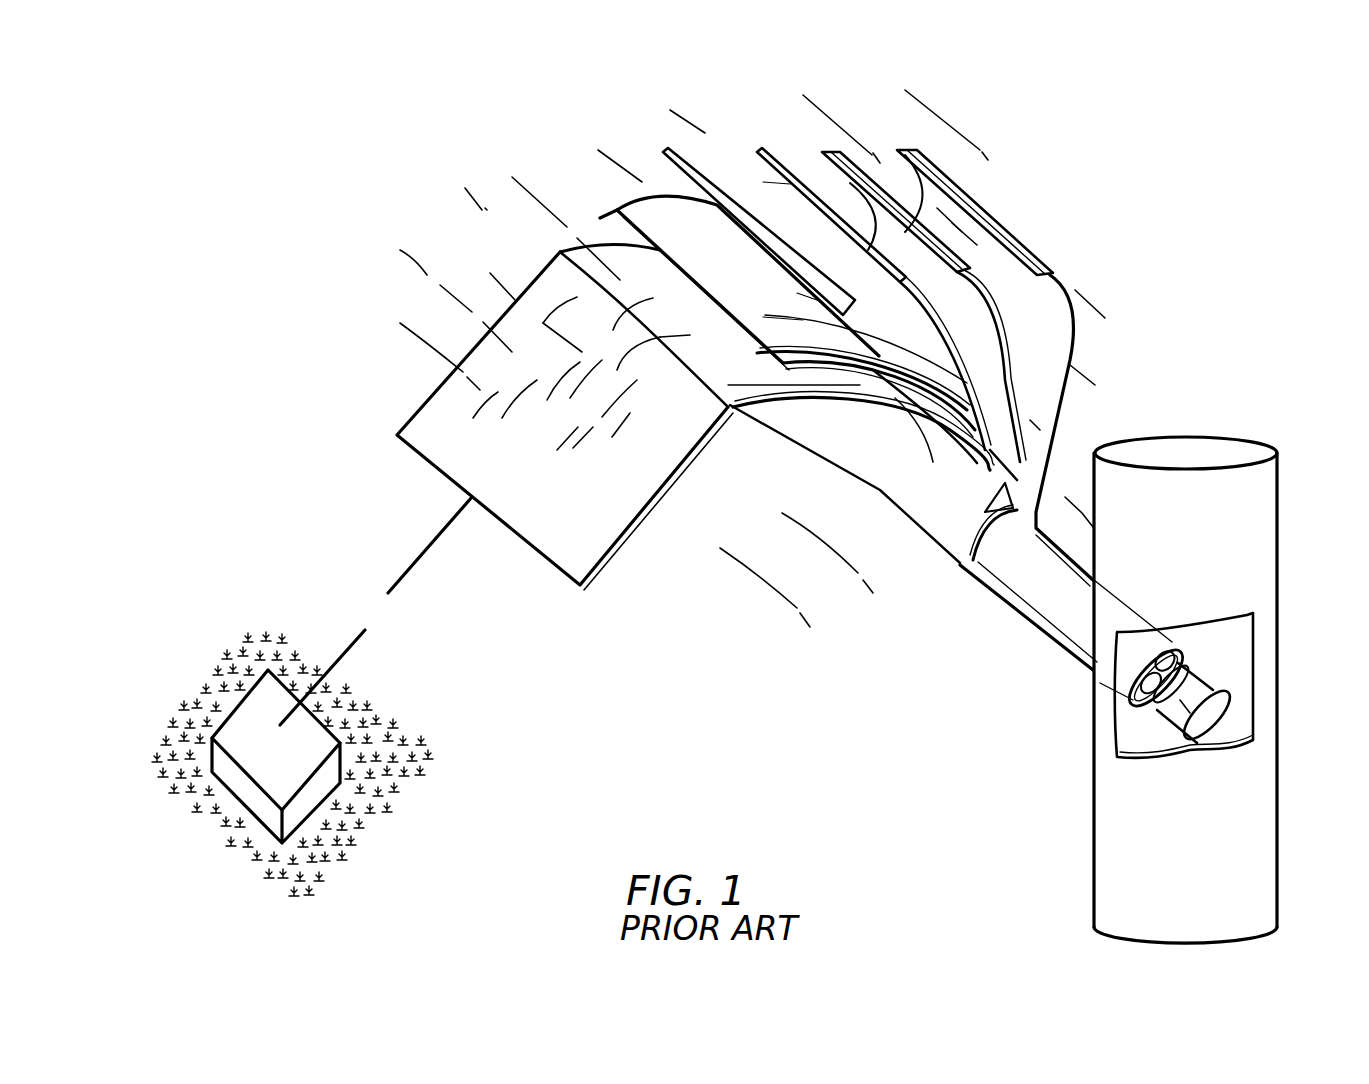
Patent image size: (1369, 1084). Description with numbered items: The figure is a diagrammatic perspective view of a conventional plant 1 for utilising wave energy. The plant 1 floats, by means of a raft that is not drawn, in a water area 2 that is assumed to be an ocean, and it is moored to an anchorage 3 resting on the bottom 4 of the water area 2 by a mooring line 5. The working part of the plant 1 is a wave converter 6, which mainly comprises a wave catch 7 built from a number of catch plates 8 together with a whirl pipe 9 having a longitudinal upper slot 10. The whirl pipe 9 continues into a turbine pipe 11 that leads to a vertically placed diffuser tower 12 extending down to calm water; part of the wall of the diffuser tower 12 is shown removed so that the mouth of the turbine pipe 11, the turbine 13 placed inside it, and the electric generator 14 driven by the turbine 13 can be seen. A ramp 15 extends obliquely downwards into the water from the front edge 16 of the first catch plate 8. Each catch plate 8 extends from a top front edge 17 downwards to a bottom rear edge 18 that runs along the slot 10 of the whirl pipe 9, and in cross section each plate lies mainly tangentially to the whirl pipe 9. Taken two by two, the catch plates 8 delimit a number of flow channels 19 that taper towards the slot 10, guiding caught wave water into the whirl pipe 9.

The plant 1 is at (326, 460).
The water area 2 is at (870, 641).
The anchorage 3 is at (310, 738).
The bottom 4 is at (383, 869).
The mooring line 5 is at (327, 665).
The wave converter 6 is at (1036, 181).
The wave catch 7 is at (1045, 351).
The catch plates 8 is at (730, 184).
The whirl pipe 9 is at (960, 563).
The longitudinal upper slot 10 is at (977, 562).
The turbine pipe 11 is at (1052, 652).
The diffuser tower 12 is at (1247, 873).
The turbine 13 is at (1140, 712).
The electric generator 14 is at (1188, 733).
The ramp 15 is at (603, 518).
The front edge 16 is at (733, 405).
The top front edge 17 is at (632, 232).
The bottom rear edge 18 is at (1023, 464).
The flow channels 19 is at (971, 520).